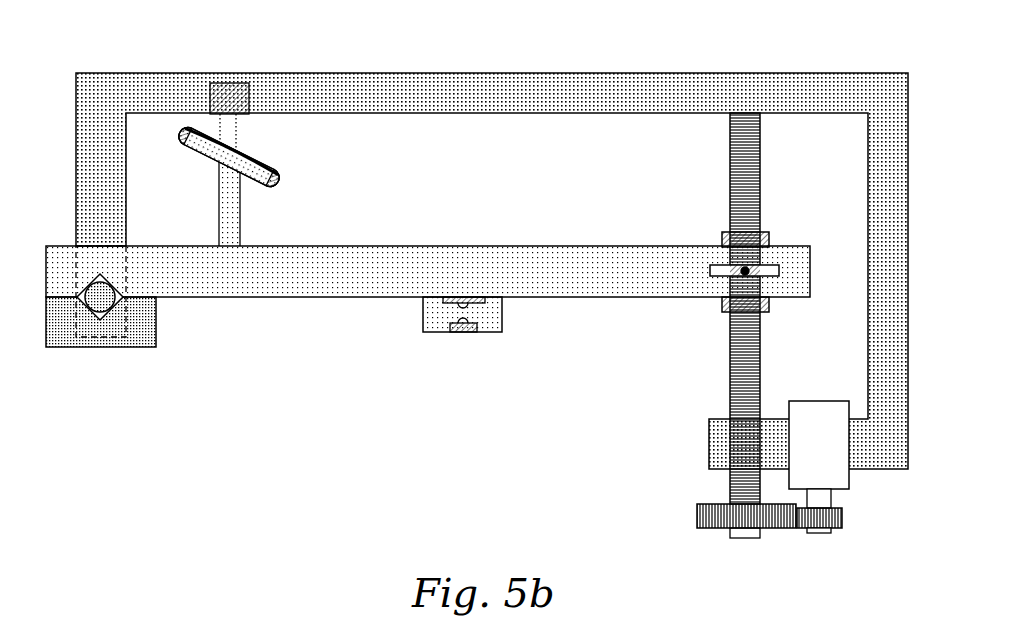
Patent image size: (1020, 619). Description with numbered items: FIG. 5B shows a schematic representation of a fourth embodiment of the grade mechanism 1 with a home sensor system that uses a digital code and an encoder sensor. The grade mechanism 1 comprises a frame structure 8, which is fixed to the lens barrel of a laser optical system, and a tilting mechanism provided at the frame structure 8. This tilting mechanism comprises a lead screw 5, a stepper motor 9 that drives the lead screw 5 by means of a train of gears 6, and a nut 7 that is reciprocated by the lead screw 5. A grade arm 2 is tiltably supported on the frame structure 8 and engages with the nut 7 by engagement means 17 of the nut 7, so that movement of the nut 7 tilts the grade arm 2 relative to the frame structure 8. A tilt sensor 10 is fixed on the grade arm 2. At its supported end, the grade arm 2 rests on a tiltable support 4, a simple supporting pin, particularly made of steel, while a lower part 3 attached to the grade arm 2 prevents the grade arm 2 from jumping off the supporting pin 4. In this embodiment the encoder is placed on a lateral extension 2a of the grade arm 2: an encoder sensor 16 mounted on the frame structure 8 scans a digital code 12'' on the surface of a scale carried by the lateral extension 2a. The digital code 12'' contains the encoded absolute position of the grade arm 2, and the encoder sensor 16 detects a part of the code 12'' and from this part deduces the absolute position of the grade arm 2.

The grade mechanism 1 is at (492, 237).
The grade arm 2 is at (380, 262).
The lateral extension 2a is at (228, 205).
The lower part 3 is at (140, 330).
The tiltable support 4 is at (100, 300).
The lead screw 5 is at (742, 125).
The train of gears 6 is at (730, 518).
The nut 7 is at (722, 232).
The frame structure 8 is at (550, 97).
The stepper motor 9 is at (835, 462).
The tilt sensor 10 is at (428, 346).
The digital code 12'' is at (207, 162).
The encoder sensor 16 is at (253, 113).
The engagement means 17 is at (743, 273).